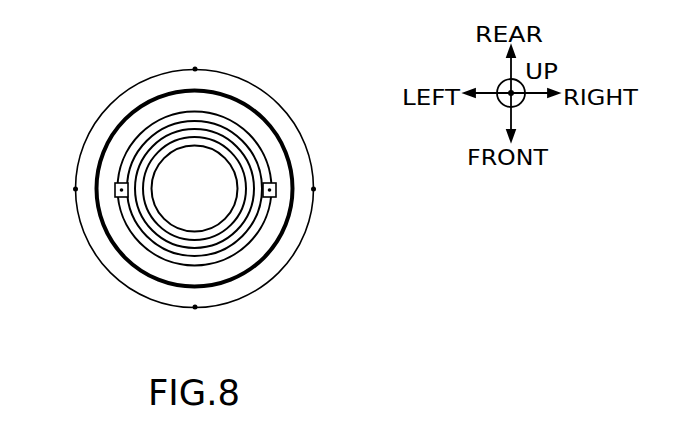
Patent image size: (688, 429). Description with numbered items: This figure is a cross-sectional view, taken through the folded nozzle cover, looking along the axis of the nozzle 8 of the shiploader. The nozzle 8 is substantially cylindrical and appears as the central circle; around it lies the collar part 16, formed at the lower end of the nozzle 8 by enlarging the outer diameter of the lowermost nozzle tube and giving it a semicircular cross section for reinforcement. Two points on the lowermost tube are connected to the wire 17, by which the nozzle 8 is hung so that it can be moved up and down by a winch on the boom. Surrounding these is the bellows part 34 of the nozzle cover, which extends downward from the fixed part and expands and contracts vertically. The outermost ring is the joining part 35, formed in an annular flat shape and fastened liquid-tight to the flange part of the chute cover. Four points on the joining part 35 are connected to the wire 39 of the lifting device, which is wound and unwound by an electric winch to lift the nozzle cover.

The nozzle 8 is at (192, 190).
The collar part 16 is at (243, 122).
The wire 17 is at (115, 190).
The bellows part 34 is at (268, 121).
The joining part 35 is at (305, 142).
The wire 39 is at (195, 69).